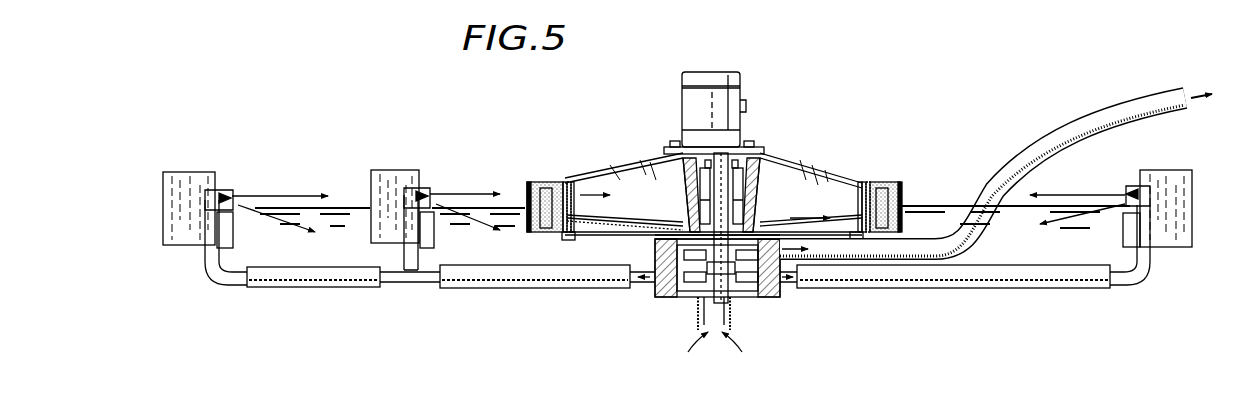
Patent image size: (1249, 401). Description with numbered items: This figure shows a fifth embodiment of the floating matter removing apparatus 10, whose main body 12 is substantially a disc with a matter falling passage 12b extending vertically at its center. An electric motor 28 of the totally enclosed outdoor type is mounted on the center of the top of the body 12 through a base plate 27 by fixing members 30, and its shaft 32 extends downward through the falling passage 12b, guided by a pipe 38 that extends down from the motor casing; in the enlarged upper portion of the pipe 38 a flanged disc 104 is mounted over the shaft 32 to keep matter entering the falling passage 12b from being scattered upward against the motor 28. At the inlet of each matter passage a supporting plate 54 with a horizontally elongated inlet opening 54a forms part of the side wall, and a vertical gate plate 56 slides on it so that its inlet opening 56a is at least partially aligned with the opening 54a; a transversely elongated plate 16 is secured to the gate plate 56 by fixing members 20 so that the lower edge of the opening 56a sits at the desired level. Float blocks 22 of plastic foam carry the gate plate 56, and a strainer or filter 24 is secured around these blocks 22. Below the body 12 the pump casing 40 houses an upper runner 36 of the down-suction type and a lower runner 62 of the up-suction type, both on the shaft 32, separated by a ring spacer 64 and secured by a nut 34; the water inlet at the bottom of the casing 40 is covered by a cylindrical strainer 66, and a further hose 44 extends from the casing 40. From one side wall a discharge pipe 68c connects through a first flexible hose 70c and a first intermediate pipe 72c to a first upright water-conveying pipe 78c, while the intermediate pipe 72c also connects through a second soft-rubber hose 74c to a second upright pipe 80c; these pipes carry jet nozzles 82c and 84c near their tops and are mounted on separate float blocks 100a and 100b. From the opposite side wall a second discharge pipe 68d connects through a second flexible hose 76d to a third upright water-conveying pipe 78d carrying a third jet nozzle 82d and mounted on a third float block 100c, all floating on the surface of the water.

The frame 10 is at (813, 152).
The main body 12 is at (631, 164).
The matter falling passage 12b is at (622, 168).
The transversely elongated plate 16 is at (540, 186).
The fixing members 20 is at (564, 238).
The float blocks 22 is at (548, 184).
The strainer or filter 24 is at (526, 182).
The base plate 27 is at (667, 147).
The electric motor 28 is at (710, 78).
The fixing members 30 is at (674, 138).
The shaft 32 is at (690, 188).
The nut 34 is at (706, 326).
The runner or impeller 36 is at (656, 243).
The guide pipe 38 is at (744, 202).
The pump casing 40 is at (765, 286).
The discharge hose 44 is at (1044, 138).
The gate means supporting plate 54 is at (568, 186).
The inlet opening 54a is at (572, 188).
The gate plate 56 is at (569, 182).
The inlet opening 56a is at (572, 182).
The lower runner 62 is at (741, 288).
The ring spacer 64 is at (704, 278).
The strainer 66 is at (720, 352).
The discharge pipe 68c is at (643, 288).
The second discharge pipe 68d is at (793, 284).
The first hose 70c is at (538, 288).
The first intermediate pipe 72c is at (436, 282).
The second hose pipe 74c is at (304, 288).
The second flexible hose 76d is at (1018, 288).
The first upright water-conveying pipe 78c is at (404, 270).
The third upright water-conveying pipe 78d is at (1163, 268).
The second upright water-conveying pipe 80c is at (212, 258).
The jet nozzle 82c is at (424, 188).
The third jet nozzle 82d is at (1134, 184).
The jet nozzle 84c is at (236, 190).
The float block 100a is at (392, 180).
The float block 100b is at (202, 176).
The third float block 100c is at (1186, 188).
The disc 104 is at (750, 178).